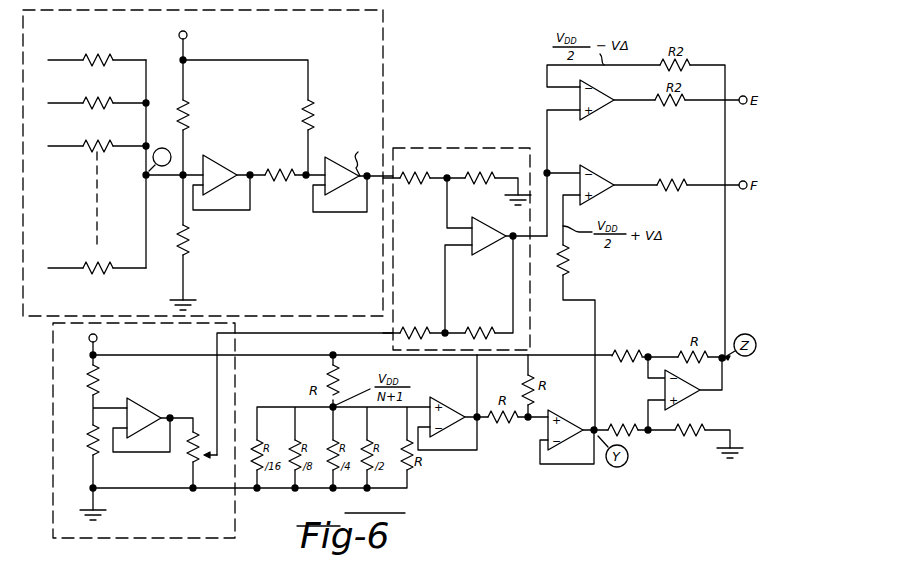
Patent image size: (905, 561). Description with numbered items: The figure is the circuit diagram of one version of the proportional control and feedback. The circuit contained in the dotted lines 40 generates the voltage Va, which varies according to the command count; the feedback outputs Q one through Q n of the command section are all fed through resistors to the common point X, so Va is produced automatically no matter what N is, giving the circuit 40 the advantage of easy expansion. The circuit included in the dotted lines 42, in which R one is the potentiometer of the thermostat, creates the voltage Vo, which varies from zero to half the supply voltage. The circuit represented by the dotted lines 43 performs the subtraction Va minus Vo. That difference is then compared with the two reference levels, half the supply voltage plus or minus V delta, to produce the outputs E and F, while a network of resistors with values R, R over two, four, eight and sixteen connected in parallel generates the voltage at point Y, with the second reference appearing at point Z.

The dotted-line circuit generating Va 40 is at (385, 32).
The dotted-line circuit generating Vo 42 is at (240, 531).
The dotted-line subtraction circuit 43 is at (510, 145).